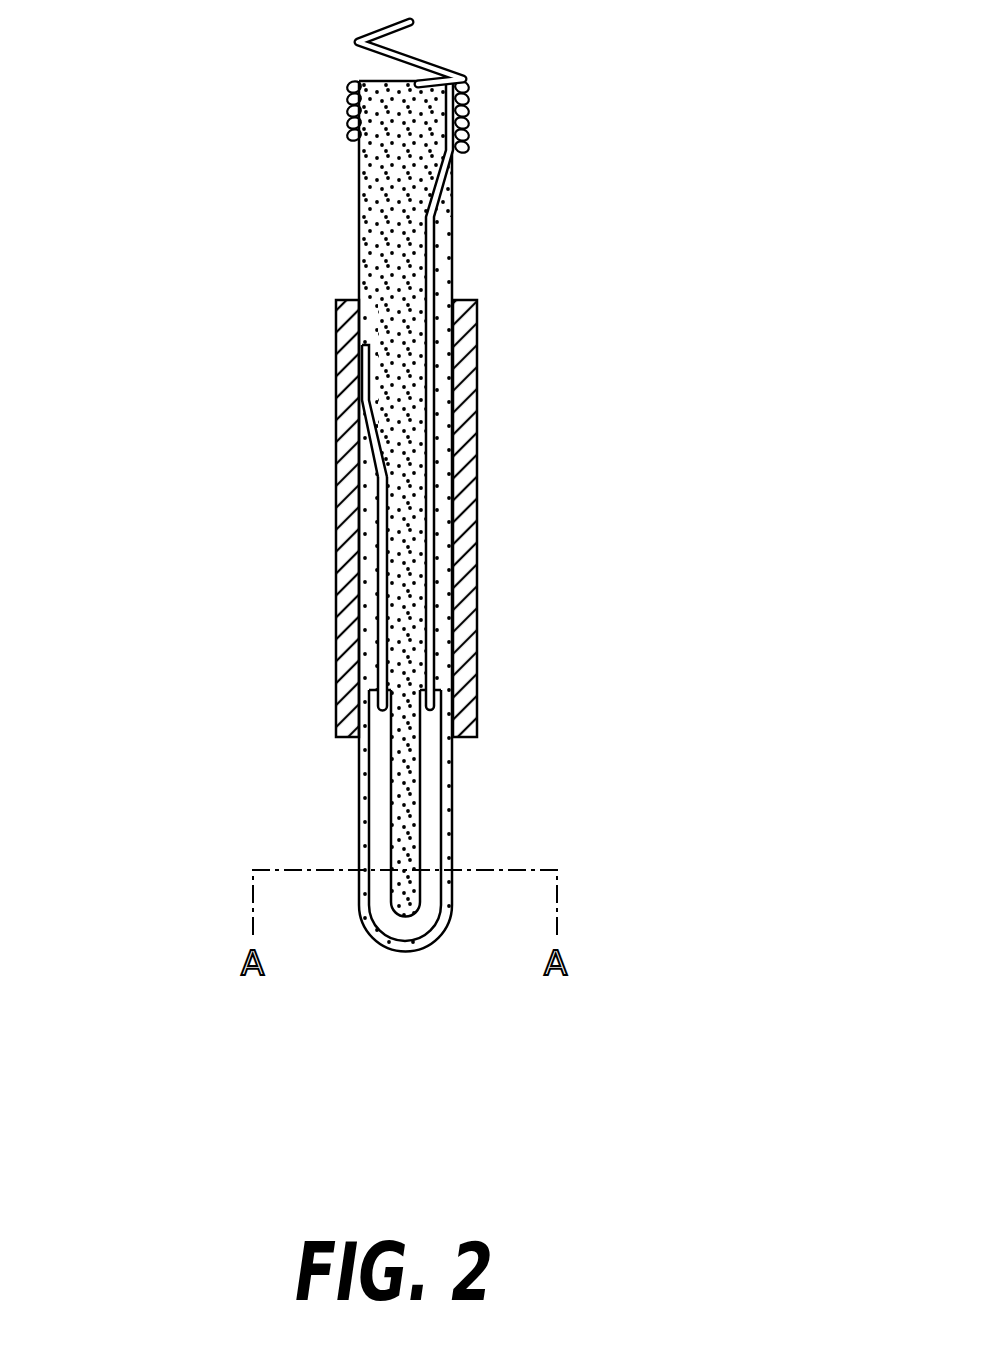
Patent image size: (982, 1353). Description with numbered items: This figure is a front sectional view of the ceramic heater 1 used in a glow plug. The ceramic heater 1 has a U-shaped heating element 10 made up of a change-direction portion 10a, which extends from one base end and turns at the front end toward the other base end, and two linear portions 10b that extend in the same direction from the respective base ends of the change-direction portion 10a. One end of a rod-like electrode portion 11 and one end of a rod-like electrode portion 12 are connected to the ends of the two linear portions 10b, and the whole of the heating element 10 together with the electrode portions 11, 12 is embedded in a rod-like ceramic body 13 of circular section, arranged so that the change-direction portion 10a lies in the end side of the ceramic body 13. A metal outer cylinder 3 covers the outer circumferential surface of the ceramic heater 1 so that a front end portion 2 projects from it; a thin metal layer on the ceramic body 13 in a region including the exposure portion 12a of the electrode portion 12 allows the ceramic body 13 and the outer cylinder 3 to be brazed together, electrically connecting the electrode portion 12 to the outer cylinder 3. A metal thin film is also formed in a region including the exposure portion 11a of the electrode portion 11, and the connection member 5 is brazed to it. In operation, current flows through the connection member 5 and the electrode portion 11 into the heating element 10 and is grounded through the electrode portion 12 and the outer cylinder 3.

The ceramic heater 1 is at (388, 570).
The front end portion 2 is at (483, 610).
The outer cylinder 3 is at (465, 397).
The connection member 5 is at (425, 62).
The heating element 10 is at (378, 848).
The change-direction portion 10a is at (388, 928).
The linear portions 10b is at (360, 773).
The electrode portion 11 is at (427, 540).
The exposure portion 11a is at (467, 125).
The electrode portion 12 is at (277, 528).
The exposure portion 12a is at (338, 374).
The ceramic body 13 is at (367, 233).